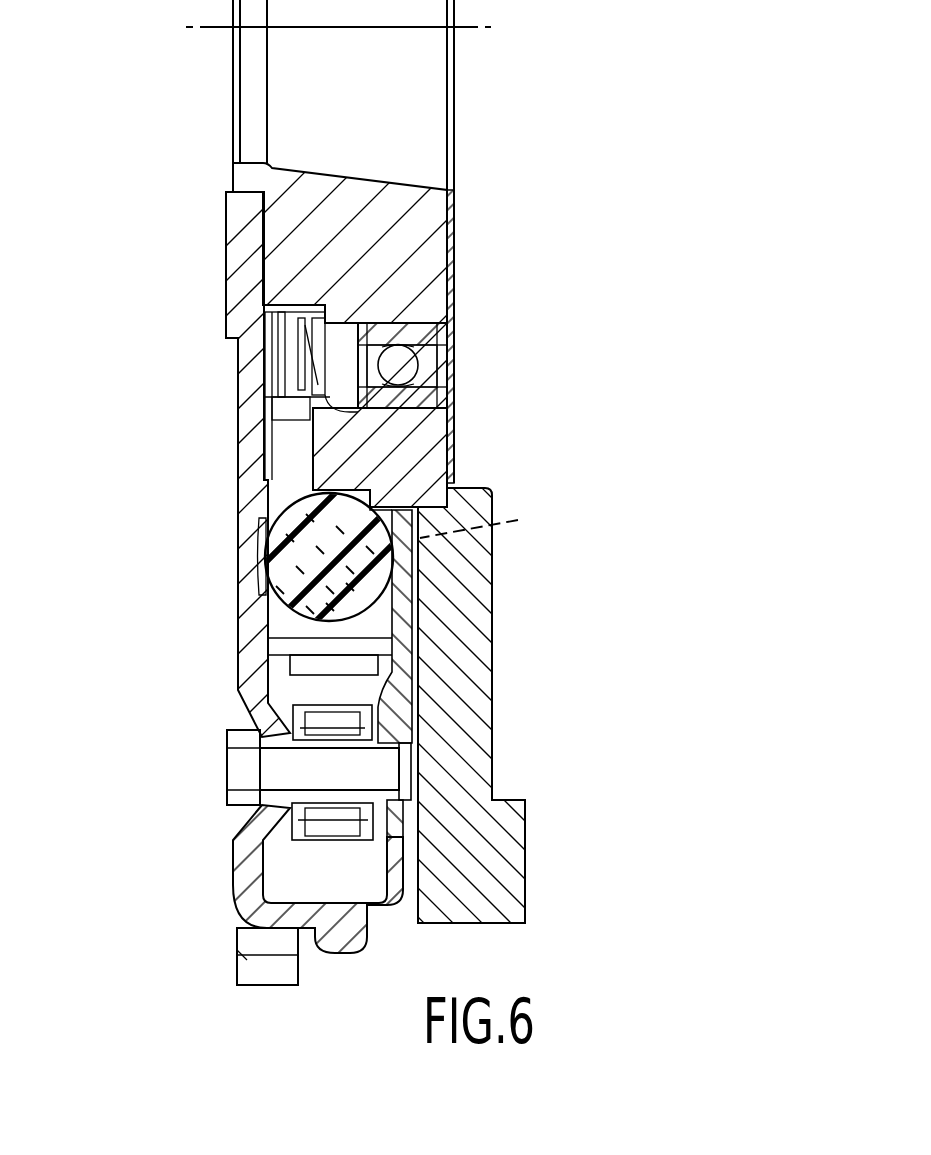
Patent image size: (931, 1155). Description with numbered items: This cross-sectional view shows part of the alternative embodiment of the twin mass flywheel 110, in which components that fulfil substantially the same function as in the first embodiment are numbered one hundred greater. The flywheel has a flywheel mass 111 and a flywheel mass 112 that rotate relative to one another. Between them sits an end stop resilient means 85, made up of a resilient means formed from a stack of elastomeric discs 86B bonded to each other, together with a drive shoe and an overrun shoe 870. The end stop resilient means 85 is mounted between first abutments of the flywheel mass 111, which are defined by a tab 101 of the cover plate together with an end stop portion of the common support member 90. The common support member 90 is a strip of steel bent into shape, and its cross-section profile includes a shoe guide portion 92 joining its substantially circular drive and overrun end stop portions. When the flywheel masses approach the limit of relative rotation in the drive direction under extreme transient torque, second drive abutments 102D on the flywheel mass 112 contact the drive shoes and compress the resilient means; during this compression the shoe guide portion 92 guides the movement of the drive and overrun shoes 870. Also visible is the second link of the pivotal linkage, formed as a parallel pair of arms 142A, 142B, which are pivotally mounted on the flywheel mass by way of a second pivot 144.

The twin mass flywheel 110 is at (528, 579).
The flywheel mass 111 is at (220, 429).
The flywheel mass 112 is at (510, 645).
The second drive abutments 102D is at (258, 543).
The end stop resilient means 85 is at (398, 483).
The elastomeric discs 86B is at (378, 525).
The tab 101 is at (492, 523).
The overrun shoe 870 is at (283, 644).
The common support member 90 is at (292, 668).
The shoe guide portion 92 is at (280, 688).
The second pivot 144 is at (388, 770).
The arm of second link 142B is at (298, 833).
The arm of second link 142A is at (373, 847).